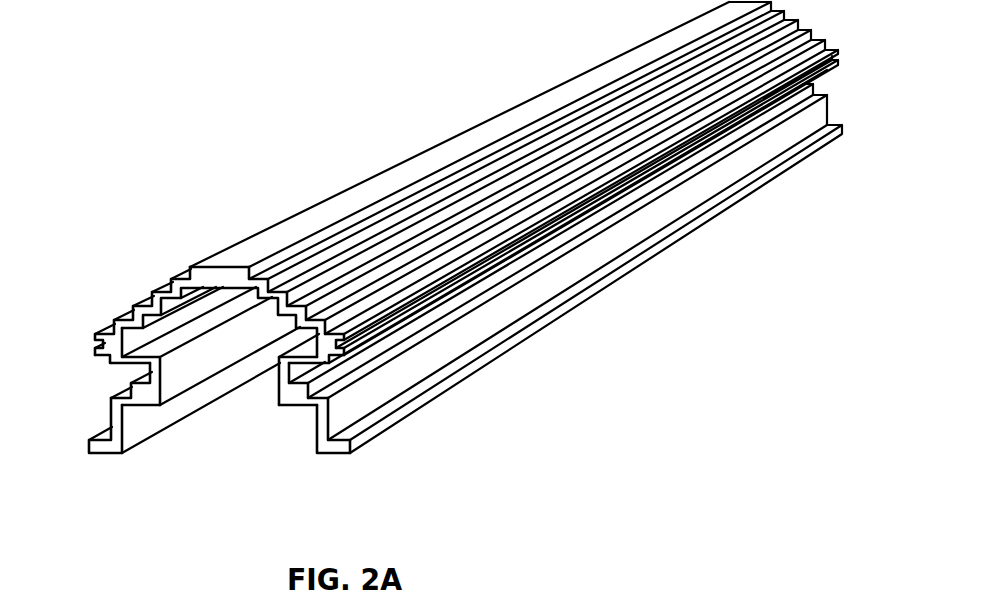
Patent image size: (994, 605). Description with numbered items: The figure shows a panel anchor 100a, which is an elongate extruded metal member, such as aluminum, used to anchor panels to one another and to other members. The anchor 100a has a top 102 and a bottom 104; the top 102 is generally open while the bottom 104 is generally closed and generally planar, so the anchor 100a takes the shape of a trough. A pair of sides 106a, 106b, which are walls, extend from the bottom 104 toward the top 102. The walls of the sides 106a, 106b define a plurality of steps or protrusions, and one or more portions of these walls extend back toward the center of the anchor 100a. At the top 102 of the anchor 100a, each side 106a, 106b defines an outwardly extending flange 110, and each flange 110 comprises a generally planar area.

The anchor 100a is at (431, 264).
The top 102 is at (182, 458).
The bottom 104 is at (254, 212).
The side 106a is at (413, 332).
The side 106b is at (124, 365).
The flange 110 is at (103, 455).